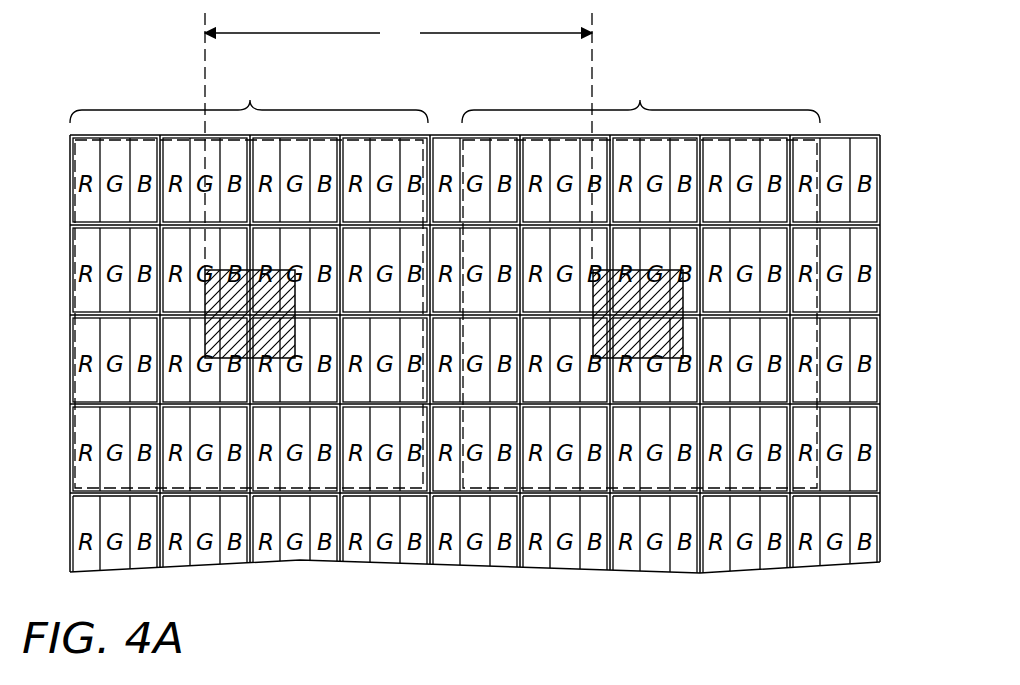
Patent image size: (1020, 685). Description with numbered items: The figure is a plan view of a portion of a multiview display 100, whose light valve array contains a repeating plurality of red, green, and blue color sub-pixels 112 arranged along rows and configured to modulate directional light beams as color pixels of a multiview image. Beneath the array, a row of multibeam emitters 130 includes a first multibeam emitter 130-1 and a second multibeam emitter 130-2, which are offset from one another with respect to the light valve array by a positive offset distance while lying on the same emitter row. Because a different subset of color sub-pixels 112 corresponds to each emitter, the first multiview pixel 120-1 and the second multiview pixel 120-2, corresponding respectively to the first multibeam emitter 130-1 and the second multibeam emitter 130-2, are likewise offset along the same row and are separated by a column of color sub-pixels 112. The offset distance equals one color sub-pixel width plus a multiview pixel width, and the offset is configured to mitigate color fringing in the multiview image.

The multiview display 100 is at (503, 318).
The color sub-pixel 112 is at (832, 143).
The first multiview pixel 120-1 is at (249, 250).
The second multiview pixel 120-2 is at (641, 250).
The multibeam emitter 130 is at (570, 446).
The first multibeam emitter 130-1 is at (262, 386).
The second multibeam emitter 130-2 is at (650, 386).